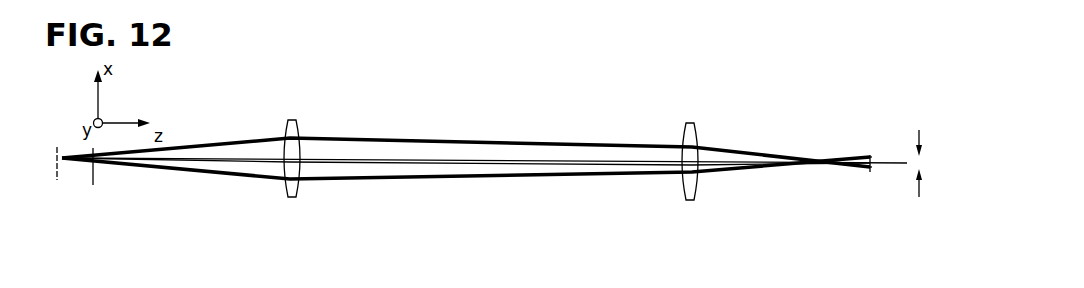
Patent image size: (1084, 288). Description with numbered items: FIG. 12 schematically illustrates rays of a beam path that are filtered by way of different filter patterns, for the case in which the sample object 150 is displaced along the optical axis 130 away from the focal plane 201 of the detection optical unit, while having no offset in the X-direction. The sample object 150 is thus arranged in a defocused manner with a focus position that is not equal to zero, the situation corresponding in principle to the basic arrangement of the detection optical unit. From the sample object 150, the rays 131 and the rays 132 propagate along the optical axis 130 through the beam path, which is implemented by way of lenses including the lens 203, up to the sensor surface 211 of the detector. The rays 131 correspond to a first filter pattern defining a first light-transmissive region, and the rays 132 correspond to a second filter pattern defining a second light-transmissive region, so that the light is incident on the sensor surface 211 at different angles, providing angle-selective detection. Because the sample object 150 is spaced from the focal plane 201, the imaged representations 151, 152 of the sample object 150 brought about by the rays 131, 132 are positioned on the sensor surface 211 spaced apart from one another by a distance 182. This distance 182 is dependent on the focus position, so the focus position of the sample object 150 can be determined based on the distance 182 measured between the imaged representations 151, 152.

The optical axis 130 is at (628, 168).
The rays 131 is at (240, 177).
The rays 132 is at (240, 142).
The sample object 150 is at (57, 182).
The imaged representation 151 is at (872, 157).
The imaged representation 152 is at (873, 168).
The distance 182 is at (919, 192).
The focal plane 201 is at (96, 187).
The lens 203 is at (692, 200).
The sensor surface 211 is at (868, 172).